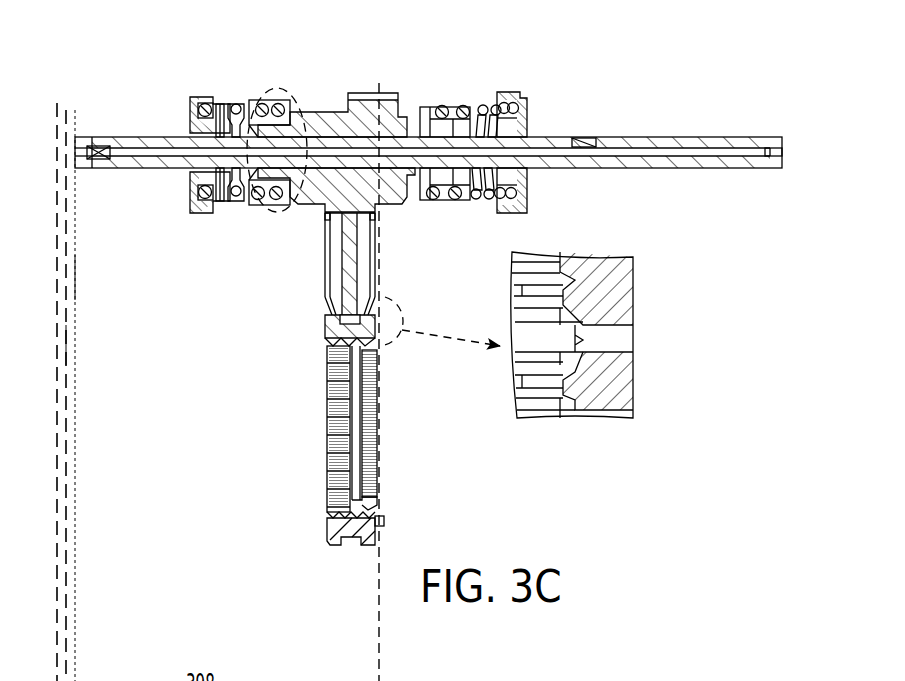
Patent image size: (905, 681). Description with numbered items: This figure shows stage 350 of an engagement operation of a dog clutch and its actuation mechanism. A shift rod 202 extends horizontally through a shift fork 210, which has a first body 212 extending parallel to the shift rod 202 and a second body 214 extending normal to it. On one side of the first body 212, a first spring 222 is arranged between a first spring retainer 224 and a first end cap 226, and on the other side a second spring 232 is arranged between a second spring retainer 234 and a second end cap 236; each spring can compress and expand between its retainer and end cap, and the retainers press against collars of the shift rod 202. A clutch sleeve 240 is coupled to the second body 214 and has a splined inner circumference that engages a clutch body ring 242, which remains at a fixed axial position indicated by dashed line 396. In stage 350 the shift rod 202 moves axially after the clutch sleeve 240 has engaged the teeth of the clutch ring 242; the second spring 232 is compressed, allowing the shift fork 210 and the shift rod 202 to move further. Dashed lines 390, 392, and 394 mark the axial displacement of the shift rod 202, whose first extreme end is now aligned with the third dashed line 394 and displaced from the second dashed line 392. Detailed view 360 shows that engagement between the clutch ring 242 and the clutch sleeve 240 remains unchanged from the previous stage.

The shift rod 202 is at (135, 137).
The shift fork 210 is at (355, 138).
The first body 212 is at (322, 112).
The second body 214 is at (324, 286).
The first spring 222 is at (218, 100).
The first spring retainer 224 is at (257, 128).
The first end cap 226 is at (183, 137).
The second spring 232 is at (478, 200).
The second spring retainer 234 is at (425, 200).
The second end cap 236 is at (522, 132).
The clutch sleeve 240 is at (326, 441).
The clutch body ring 242 is at (378, 449).
The stage 350 is at (447, 97).
The detailed view 360 is at (538, 368).
The dashed line 390 is at (57, 103).
The second dashed line 392 is at (66, 337).
The third dashed line 394 is at (78, 265).
The dashed line 396 is at (381, 618).